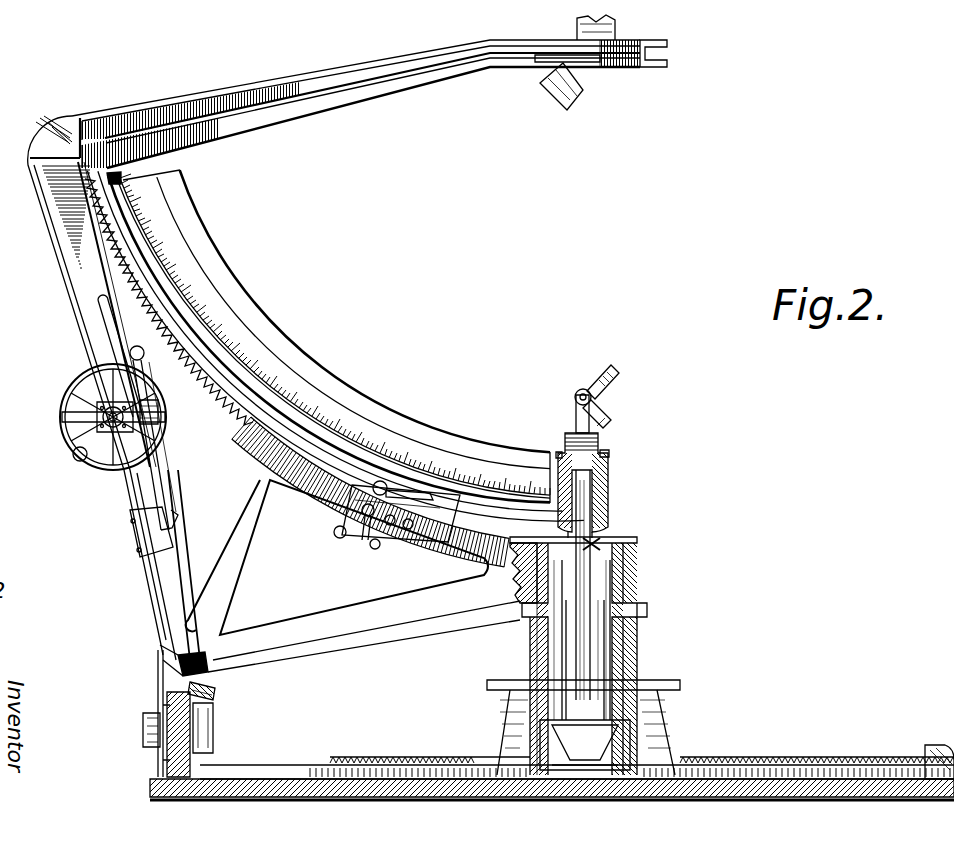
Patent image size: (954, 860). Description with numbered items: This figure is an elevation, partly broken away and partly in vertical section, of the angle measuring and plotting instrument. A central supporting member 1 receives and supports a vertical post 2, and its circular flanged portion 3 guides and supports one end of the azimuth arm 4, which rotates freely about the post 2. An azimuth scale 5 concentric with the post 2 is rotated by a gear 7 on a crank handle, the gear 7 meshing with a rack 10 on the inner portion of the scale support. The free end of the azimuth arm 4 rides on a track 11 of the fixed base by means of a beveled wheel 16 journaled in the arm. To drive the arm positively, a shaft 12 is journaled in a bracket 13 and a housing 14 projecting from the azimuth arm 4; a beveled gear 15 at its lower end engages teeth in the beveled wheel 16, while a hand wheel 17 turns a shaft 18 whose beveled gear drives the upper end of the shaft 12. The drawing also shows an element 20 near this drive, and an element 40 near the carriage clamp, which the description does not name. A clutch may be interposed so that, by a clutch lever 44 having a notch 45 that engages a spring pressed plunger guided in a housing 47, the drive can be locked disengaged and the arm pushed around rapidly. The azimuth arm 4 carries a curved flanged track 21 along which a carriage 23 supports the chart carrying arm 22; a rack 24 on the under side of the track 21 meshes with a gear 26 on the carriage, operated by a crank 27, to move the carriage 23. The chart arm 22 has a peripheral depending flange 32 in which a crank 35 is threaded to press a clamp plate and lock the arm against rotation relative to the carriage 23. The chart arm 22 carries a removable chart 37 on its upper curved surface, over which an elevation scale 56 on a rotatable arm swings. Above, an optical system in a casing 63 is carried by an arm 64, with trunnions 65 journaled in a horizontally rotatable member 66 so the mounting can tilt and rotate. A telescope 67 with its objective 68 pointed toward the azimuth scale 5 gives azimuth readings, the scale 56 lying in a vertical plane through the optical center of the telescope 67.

The central supporting member 1 is at (657, 693).
The vertical post 2 is at (585, 584).
The circular flanged portion 3 is at (647, 608).
The azimuth arm 4 is at (353, 576).
The azimuth scale 5 is at (730, 758).
The gear 7 is at (893, 760).
The rack 10 is at (837, 772).
The track 11 is at (152, 786).
The shaft 12 is at (170, 577).
The bracket 13 is at (217, 658).
The housing 14 is at (92, 405).
The beveled gear 15 is at (220, 691).
The beveled wheel 16 is at (160, 696).
The hand wheel 17 is at (78, 386).
The shaft 18 is at (98, 425).
The frame bar 20 is at (153, 538).
The track 21 is at (213, 378).
The chart carrying arm 22 is at (170, 283).
The carriage 23 is at (490, 523).
The rack 24 is at (468, 553).
The gear 26 is at (345, 535).
The crank 27 is at (366, 518).
The peripheral depending flange 32 is at (458, 507).
The crank 35 is at (397, 473).
The chart 37 is at (343, 427).
The clamp screw 40 is at (370, 548).
The clutch lever 44 is at (180, 501).
The notch 45 is at (165, 448).
The housing 47 is at (167, 414).
The elevation scale 56 is at (217, 325).
The casing 63 is at (577, 29).
The arm 64 is at (280, 79).
The trunnions 65 is at (547, 67).
The horizontally rotatable member 66 is at (633, 62).
The telescope 67 is at (617, 371).
The objective 68 is at (617, 421).